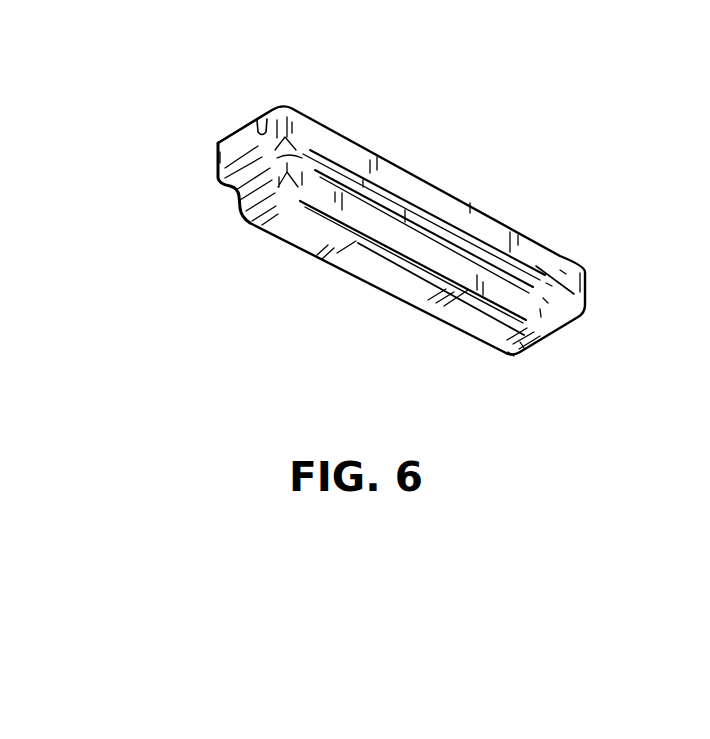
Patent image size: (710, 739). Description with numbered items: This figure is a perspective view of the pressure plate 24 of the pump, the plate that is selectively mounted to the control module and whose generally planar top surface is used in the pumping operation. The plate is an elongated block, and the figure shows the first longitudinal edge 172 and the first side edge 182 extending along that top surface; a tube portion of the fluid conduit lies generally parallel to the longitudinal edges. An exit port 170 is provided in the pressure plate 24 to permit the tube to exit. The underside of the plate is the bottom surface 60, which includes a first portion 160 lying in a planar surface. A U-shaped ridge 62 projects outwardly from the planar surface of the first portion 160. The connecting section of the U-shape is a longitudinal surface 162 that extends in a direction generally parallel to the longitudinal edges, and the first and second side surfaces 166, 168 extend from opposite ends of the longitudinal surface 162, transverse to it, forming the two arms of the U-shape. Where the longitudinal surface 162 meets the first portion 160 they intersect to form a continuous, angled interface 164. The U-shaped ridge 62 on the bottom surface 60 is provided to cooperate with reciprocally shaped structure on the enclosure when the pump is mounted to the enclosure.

The pressure plate 24 is at (448, 194).
The bottom surface 60 is at (540, 295).
The U-shaped ridge 62 is at (515, 355).
The first portion 160 is at (510, 268).
The longitudinal surface 162 is at (330, 193).
The angled interface 164 is at (373, 207).
The first side surface 166 is at (523, 350).
The second side surface 168 is at (250, 194).
The exit port 170 is at (261, 120).
The first longitudinal edge 172 is at (496, 218).
The first side edge 182 is at (230, 130).